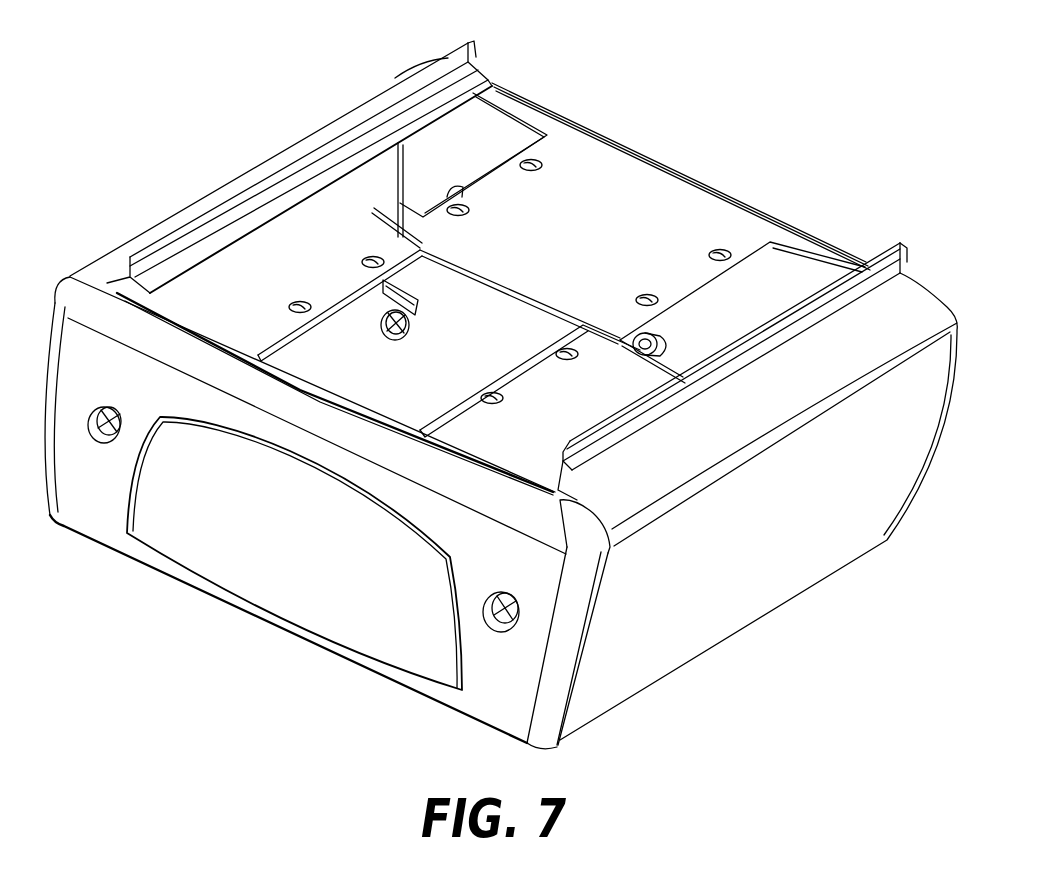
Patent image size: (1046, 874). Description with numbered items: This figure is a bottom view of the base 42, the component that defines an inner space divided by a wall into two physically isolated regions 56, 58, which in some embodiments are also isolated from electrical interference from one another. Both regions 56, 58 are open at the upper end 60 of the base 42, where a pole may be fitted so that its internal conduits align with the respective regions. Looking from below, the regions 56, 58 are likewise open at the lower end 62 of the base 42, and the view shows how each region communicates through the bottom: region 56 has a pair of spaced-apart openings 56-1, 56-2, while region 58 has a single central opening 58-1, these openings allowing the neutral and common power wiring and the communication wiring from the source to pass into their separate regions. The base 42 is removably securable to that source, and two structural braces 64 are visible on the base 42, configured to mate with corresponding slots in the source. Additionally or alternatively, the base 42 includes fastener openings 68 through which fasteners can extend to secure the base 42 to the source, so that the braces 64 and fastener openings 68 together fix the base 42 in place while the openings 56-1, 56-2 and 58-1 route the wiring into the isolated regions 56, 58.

The base 42 is at (122, 156).
The region 56 is at (516, 123).
The opening 56-1 is at (425, 162).
The opening 56-2 is at (751, 280).
The region 58 is at (310, 355).
The central opening 58-1 is at (427, 364).
The upper end 60 is at (265, 630).
The lower end 62 is at (665, 150).
The structural brace 64 is at (473, 56).
The fastener opening 68 is at (540, 168).